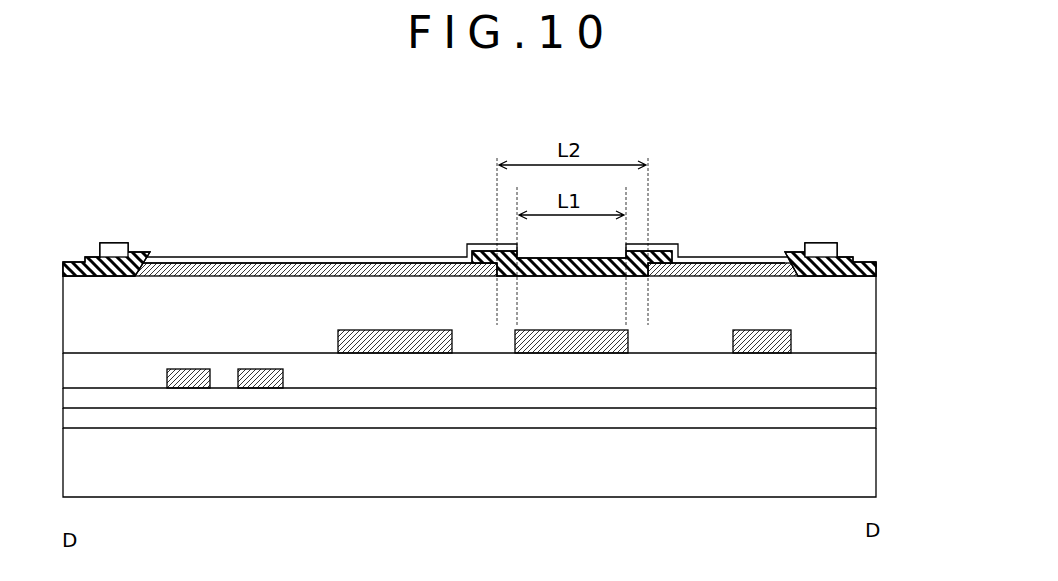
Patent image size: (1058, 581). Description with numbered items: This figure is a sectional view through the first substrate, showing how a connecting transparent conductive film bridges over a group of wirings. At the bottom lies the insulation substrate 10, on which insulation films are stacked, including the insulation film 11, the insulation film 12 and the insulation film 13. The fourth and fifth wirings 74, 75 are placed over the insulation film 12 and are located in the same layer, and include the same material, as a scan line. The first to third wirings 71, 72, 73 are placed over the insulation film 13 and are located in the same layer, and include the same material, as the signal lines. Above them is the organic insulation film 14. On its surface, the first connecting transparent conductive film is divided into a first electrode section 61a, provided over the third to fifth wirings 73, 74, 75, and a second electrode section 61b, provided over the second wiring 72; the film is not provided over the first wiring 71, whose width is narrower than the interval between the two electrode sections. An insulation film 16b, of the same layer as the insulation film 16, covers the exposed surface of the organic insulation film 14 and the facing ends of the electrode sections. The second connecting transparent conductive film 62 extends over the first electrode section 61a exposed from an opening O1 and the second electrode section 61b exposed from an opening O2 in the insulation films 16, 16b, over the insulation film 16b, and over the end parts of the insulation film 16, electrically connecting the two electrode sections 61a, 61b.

The insulation substrate 10 is at (876, 485).
The insulation film 11 is at (876, 418).
The insulation film 12 is at (876, 398).
The insulation film 13 is at (876, 360).
The organic insulation film 14 is at (876, 324).
The insulation film 16 is at (79, 262).
The insulation film 16b is at (488, 250).
The first electrode section 61a is at (342, 266).
The second electrode section 61b is at (748, 266).
The second connecting transparent conductive film 62 is at (250, 257).
The opening O1 is at (118, 258).
The opening O2 is at (817, 258).
The first wiring 71 is at (570, 353).
The second wiring 72 is at (760, 353).
The third wiring 73 is at (395, 353).
The fourth wiring 74 is at (260, 388).
The fifth wiring 75 is at (188, 388).